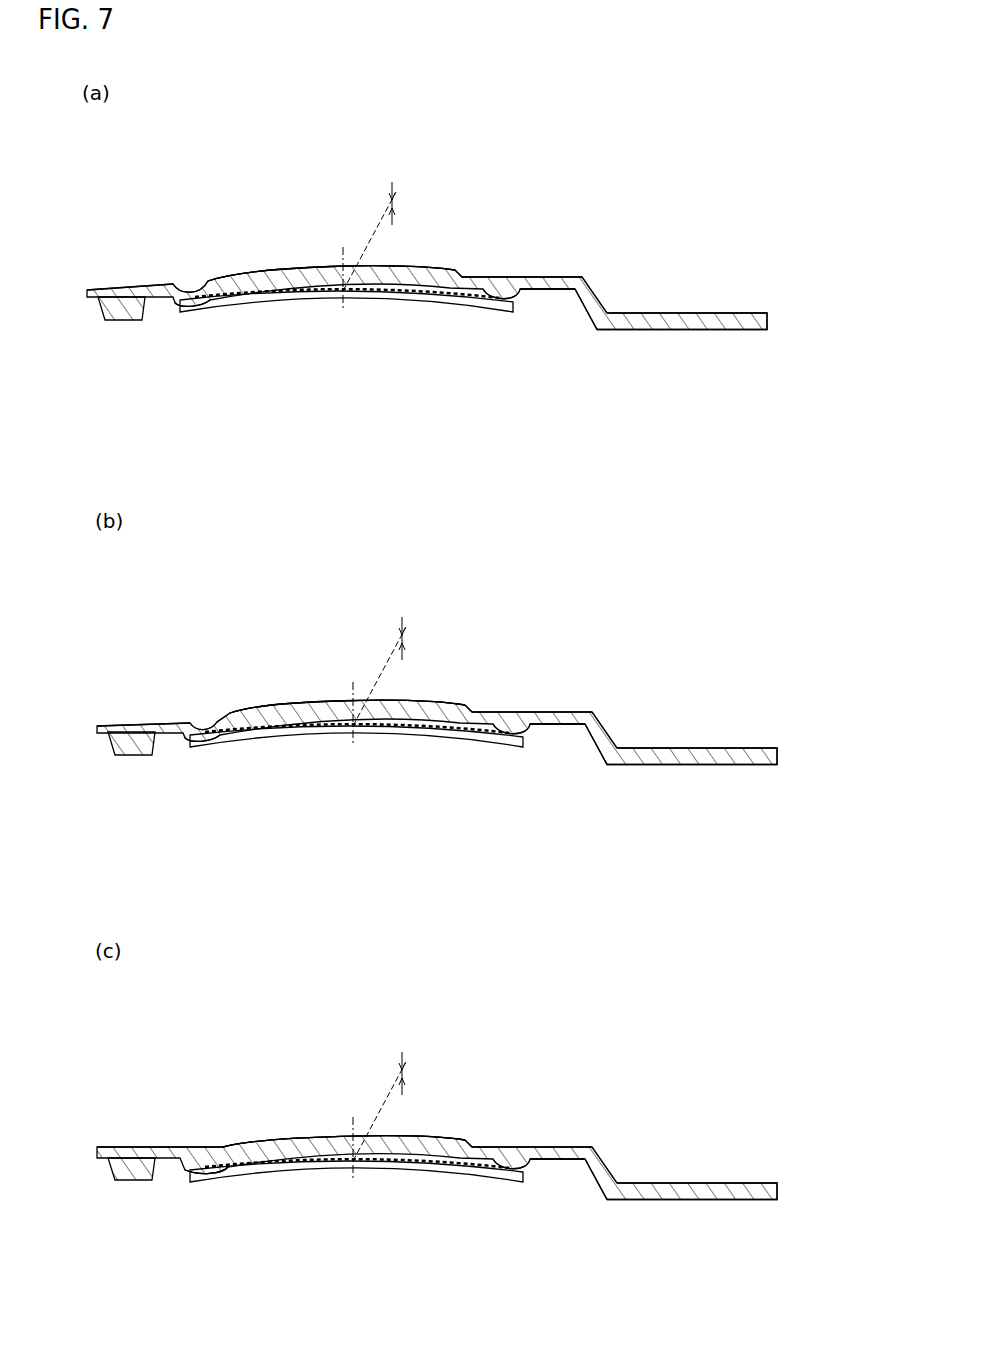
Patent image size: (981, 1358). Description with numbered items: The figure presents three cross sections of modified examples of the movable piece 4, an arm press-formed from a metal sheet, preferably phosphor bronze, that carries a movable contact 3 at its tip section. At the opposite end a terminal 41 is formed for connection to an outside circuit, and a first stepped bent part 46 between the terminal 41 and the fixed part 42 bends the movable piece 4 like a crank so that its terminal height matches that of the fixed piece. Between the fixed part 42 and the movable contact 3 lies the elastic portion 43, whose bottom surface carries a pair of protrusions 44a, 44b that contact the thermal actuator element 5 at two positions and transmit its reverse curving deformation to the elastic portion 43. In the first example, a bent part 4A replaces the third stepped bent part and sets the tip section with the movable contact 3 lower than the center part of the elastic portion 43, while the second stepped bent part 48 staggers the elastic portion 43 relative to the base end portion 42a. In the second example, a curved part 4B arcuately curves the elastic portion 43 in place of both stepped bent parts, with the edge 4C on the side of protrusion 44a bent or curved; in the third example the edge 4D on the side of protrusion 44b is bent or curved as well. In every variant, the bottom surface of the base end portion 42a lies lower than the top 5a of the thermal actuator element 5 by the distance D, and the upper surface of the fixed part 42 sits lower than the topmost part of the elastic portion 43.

The movable contact 3 is at (126, 801).
The movable piece 4 is at (452, 688).
The bent part 4A is at (271, 216).
The curved part 4B is at (281, 867).
The edge 4C is at (488, 862).
The edge 4D is at (206, 1115).
The terminal 41 is at (687, 809).
The fixed part 42 is at (537, 662).
The base end portion 42a is at (552, 786).
The elastic portion 43 is at (336, 638).
The protrusion 44a is at (525, 655).
The protrusion 44b is at (187, 660).
The first stepped bent part 46 is at (646, 679).
The second stepped bent part 48 is at (478, 209).
The thermal actuator element 5 is at (351, 801).
The top 5a is at (352, 650).
The distance D is at (384, 671).